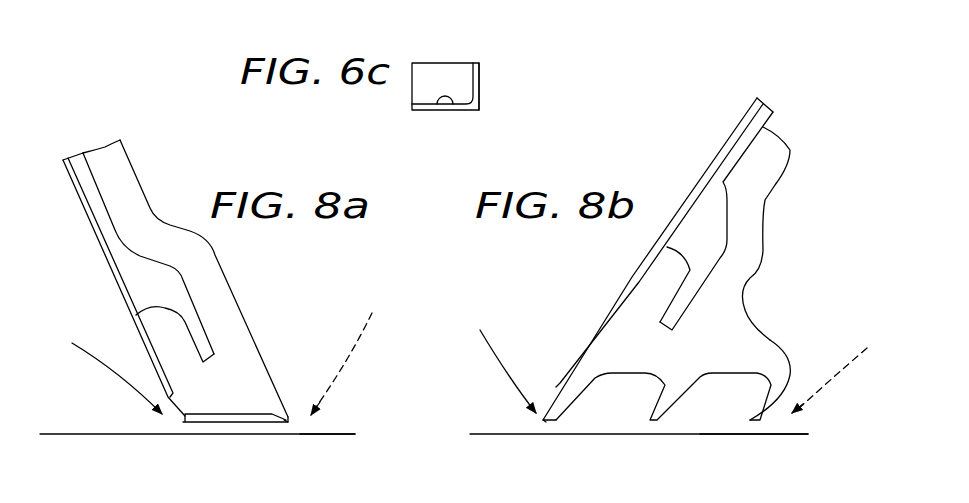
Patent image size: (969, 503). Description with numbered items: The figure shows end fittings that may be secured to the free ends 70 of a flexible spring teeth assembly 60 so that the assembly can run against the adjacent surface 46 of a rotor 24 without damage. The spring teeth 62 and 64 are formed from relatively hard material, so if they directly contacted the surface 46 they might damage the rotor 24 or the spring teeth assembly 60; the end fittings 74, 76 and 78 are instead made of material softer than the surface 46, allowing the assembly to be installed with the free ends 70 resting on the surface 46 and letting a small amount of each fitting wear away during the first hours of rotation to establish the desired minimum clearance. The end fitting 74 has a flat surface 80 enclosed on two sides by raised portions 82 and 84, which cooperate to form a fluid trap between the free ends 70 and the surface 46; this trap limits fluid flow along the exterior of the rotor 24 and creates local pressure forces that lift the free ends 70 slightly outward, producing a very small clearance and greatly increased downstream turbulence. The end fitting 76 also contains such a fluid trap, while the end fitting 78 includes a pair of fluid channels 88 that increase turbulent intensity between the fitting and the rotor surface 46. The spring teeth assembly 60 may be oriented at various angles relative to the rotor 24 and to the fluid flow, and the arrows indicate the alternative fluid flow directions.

In FIG. 8A, the rotor 24 is at (237, 437).
In FIG. 8B, the rotor 24 is at (658, 438).
In FIG. 8A, the adjacent surface 46 is at (330, 434).
In FIG. 8B, the adjacent surface 46 is at (712, 434).
In FIG. 8A, the spring teeth assembly 60 is at (203, 281).
In FIG. 8B, the spring teeth assembly 60 is at (673, 259).
In FIG. 8A, the spring tooth 62 is at (90, 231).
In FIG. 8B, the spring tooth 62 is at (635, 278).
In FIG. 8A, the spring tooth 64 is at (92, 183).
In FIG. 8B, the spring tooth 64 is at (760, 120).
In FIG. 8A, the free end 70 is at (288, 437).
In FIG. 8B, the free end 70 is at (541, 438).
In FIG. 6C, the end fitting 74 is at (483, 82).
In FIG. 8A, the end fitting 76 is at (248, 347).
In FIG. 8B, the end fitting 76 is at (675, 284).
In FIG. 8B, the end fitting 78 is at (753, 282).
In FIG. 6C, the flat surface 80 is at (424, 72).
In FIG. 6C, the raised portion 82 is at (441, 98).
In FIG. 6C, the raised portion 84 is at (466, 72).
In FIG. 8B, the fluid channels 88 is at (600, 415).